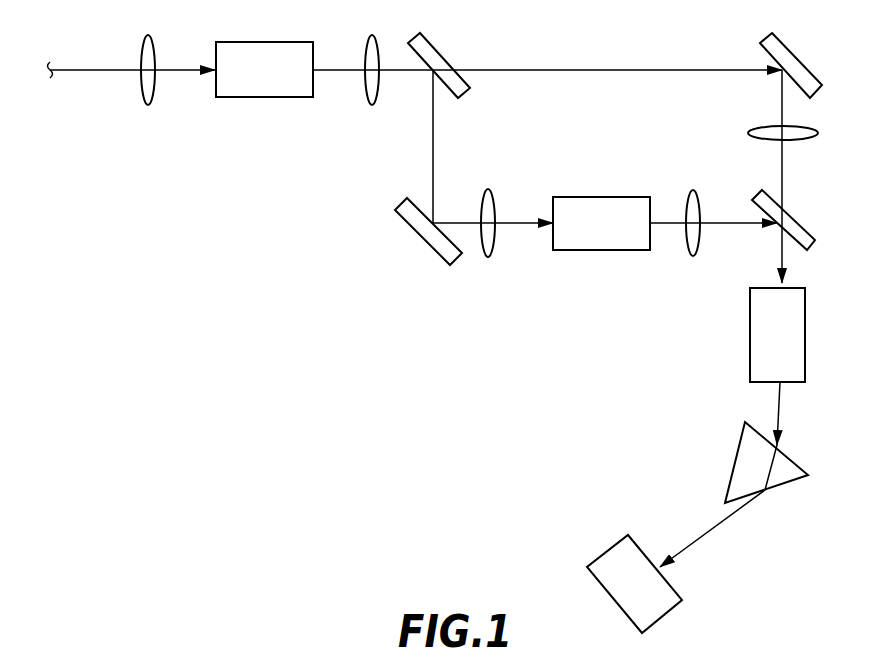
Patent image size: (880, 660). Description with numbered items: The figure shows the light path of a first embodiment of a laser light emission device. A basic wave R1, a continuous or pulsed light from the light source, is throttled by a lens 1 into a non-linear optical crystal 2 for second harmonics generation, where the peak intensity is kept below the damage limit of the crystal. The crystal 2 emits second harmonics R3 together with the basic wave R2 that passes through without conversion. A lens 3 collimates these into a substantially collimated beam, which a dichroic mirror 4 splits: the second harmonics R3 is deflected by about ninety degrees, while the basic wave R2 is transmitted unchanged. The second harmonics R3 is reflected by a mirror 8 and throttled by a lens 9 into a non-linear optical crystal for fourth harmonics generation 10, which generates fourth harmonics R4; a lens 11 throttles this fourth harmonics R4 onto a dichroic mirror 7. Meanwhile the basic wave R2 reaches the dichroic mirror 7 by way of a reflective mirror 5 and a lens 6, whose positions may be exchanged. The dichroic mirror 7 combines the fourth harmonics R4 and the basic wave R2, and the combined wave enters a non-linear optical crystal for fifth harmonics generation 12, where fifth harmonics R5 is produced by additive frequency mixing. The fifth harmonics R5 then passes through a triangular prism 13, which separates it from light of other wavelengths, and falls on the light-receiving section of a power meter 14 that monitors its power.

The lens 1 is at (152, 97).
The non-linear optical crystal for second harmonics generation 2 is at (240, 88).
The lens 3 is at (377, 100).
The dichroic mirror 4 is at (425, 45).
The reflective mirror 5 is at (788, 52).
The lens 6 is at (807, 128).
The dichroic mirror 7 is at (797, 212).
The mirror 8 is at (412, 218).
The lens 9 is at (493, 242).
The non-linear optical crystal for fourth harmonics generation 10 is at (603, 242).
The lens 11 is at (690, 235).
The non-linear optical crystal for fifth harmonics generation 12 is at (803, 307).
The triangular prism 13 is at (790, 462).
The power meter 14 is at (615, 552).
The basic wave R1 is at (85, 70).
The basic wave R2 is at (325, 70).
The second harmonics R3 is at (333, 70).
The fourth harmonics R4 is at (717, 223).
The fifth harmonics R5 is at (702, 540).